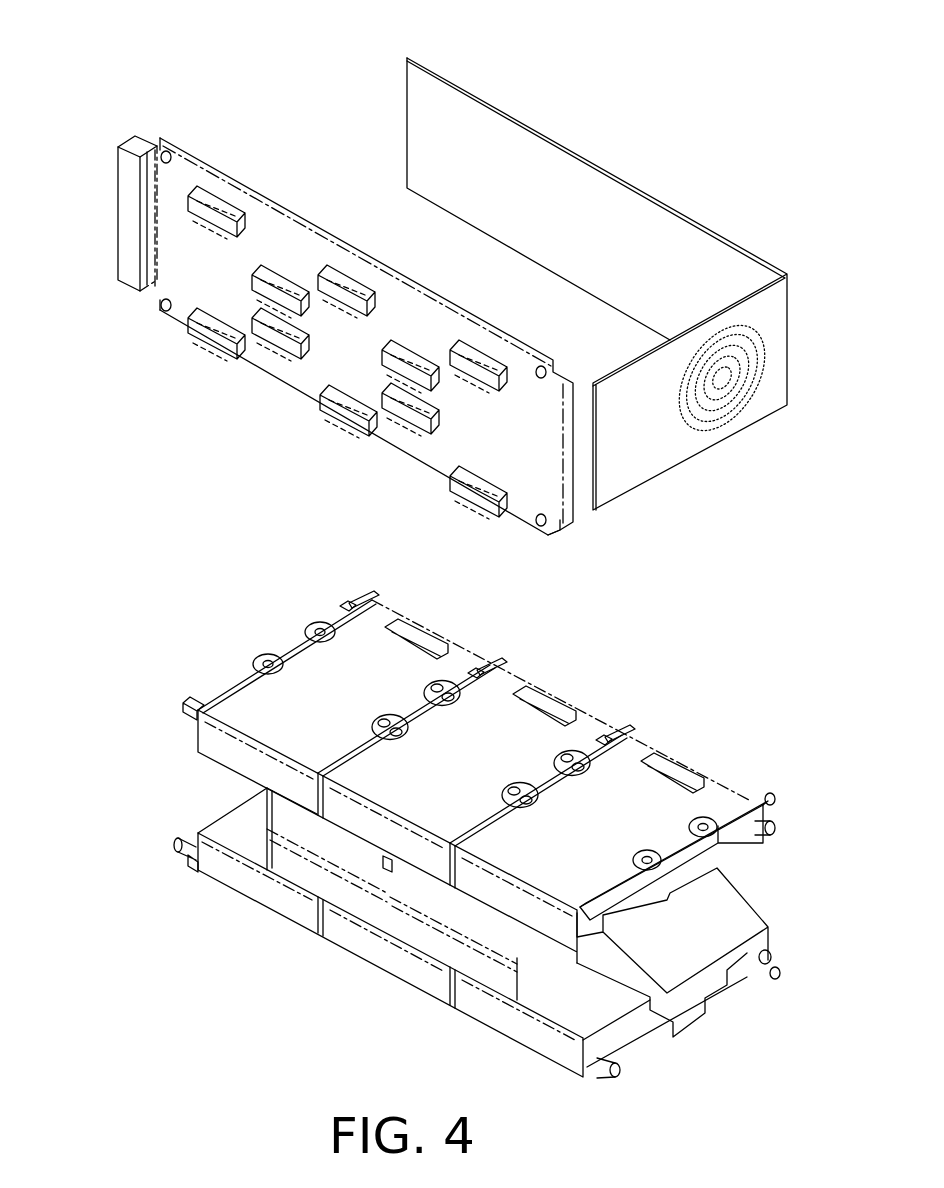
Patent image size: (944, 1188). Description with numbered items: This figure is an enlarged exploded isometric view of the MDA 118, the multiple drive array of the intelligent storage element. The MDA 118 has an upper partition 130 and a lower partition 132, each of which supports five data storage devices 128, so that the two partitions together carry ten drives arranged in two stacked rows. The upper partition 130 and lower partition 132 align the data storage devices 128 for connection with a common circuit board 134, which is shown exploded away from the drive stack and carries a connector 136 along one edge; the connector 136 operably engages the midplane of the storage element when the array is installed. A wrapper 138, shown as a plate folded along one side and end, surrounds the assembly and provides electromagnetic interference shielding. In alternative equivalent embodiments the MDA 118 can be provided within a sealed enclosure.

The MDA 118 is at (660, 60).
The data storage devices 128 is at (296, 665).
The upper partition 130 is at (748, 850).
The lower partition 132 is at (768, 928).
The common circuit board 134 is at (172, 140).
The connector 136 is at (117, 145).
The wrapper 138 is at (465, 88).